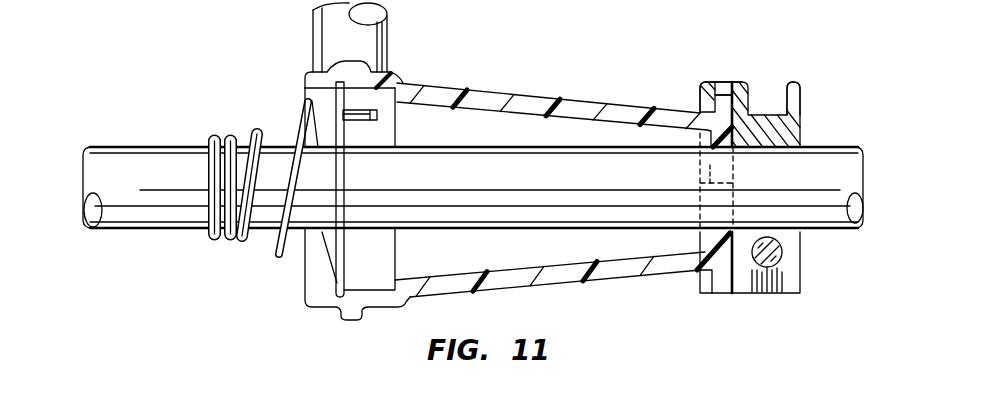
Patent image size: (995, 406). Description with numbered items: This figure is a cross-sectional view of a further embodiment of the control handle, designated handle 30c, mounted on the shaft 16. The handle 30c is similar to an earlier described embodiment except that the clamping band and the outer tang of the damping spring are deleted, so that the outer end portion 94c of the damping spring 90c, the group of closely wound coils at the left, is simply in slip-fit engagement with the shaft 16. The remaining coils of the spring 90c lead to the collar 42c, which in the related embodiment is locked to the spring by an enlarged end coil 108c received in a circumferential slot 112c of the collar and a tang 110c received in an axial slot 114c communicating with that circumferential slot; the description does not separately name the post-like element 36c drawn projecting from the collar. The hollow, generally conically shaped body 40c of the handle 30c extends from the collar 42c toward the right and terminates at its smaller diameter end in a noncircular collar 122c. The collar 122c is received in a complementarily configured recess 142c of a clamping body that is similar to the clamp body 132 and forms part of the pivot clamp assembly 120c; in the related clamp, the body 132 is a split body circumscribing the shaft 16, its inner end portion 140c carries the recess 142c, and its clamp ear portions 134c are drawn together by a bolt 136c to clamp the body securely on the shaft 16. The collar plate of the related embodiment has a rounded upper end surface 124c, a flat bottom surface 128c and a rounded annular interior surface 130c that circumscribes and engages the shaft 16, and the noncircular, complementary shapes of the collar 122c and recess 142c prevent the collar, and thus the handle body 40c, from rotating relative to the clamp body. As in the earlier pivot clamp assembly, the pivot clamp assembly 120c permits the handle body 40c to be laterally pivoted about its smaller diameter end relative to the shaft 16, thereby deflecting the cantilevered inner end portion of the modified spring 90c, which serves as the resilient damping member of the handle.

The shaft 16 is at (110, 147).
The handle 30c is at (497, 67).
The cylindrical post 36c is at (400, 30).
The handle body 40c is at (580, 100).
The clamp body flange 42c is at (404, 81).
The damping spring 90c is at (266, 254).
The outer end portion of the spring 94c is at (224, 137).
The clamp block 108c is at (345, 246).
The pivot pin 110c is at (345, 122).
The spring leg end 112c is at (337, 294).
The stop pin 114c is at (378, 115).
The pivot clamp assembly 120c is at (814, 124).
The noncircular collar 122c is at (734, 84).
The retainer lobe 124c is at (723, 97).
The retainer lip 128c is at (713, 297).
The retainer recess 130c is at (722, 160).
The clamp body 132 is at (772, 115).
The lower retainer 134c is at (801, 279).
The screw 136c is at (780, 251).
The retainer top surface 140c is at (750, 82).
The slot 142c is at (699, 178).